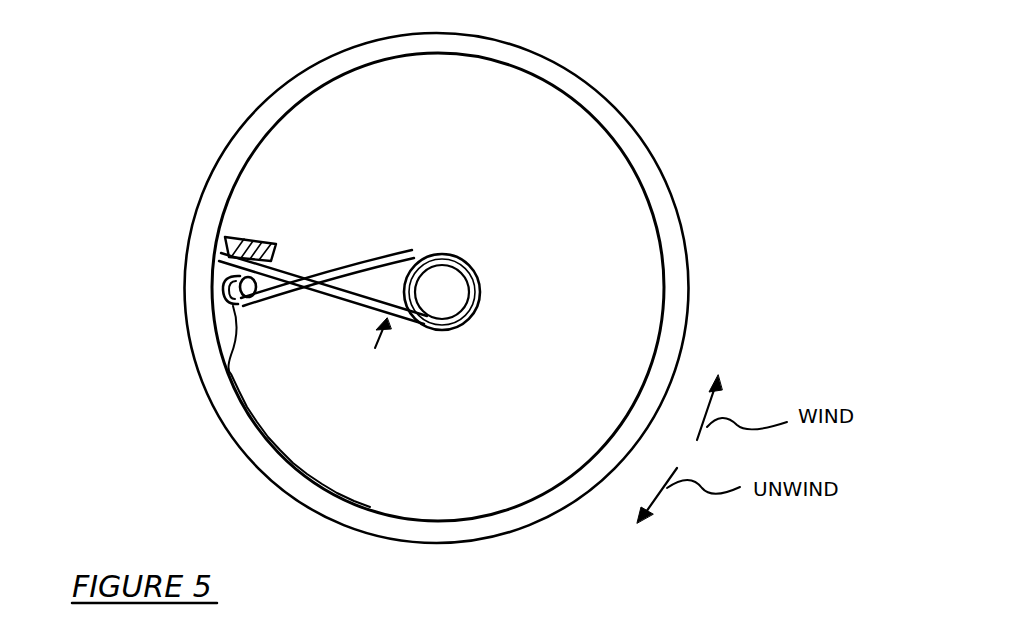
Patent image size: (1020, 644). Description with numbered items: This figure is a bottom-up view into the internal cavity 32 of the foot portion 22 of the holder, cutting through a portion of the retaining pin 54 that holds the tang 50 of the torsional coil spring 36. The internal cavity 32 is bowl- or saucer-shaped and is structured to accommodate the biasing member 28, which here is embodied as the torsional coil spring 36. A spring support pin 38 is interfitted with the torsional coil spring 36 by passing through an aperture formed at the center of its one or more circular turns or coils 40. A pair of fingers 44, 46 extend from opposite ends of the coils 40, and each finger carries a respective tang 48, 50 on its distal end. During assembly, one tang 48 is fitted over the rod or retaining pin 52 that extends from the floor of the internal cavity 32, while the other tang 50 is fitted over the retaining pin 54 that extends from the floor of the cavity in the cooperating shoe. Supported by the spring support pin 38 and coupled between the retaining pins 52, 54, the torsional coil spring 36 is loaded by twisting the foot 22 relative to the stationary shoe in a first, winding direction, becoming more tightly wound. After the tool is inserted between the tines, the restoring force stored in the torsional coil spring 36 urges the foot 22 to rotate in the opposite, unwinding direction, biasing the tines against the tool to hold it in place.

The foot portion 22 is at (688, 263).
The internal cavity 32 is at (603, 193).
The coils 40 is at (453, 252).
The spring support pin 38 is at (442, 292).
The torsional coil spring 36 is at (473, 313).
The finger 46 is at (287, 268).
The finger 44 is at (280, 300).
The retaining pin 54 is at (253, 233).
The tang 50 is at (222, 277).
The retaining pin 52 is at (227, 302).
The tang 48 is at (222, 374).
The biasing member 28 is at (400, 352).